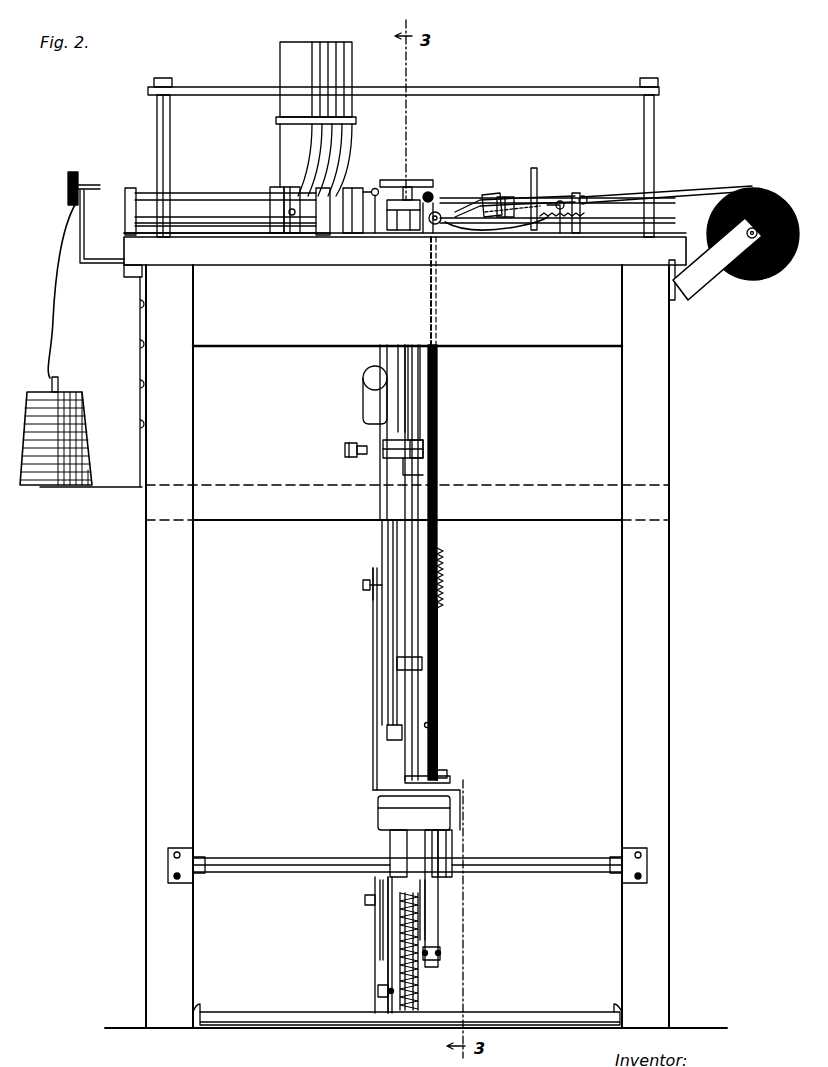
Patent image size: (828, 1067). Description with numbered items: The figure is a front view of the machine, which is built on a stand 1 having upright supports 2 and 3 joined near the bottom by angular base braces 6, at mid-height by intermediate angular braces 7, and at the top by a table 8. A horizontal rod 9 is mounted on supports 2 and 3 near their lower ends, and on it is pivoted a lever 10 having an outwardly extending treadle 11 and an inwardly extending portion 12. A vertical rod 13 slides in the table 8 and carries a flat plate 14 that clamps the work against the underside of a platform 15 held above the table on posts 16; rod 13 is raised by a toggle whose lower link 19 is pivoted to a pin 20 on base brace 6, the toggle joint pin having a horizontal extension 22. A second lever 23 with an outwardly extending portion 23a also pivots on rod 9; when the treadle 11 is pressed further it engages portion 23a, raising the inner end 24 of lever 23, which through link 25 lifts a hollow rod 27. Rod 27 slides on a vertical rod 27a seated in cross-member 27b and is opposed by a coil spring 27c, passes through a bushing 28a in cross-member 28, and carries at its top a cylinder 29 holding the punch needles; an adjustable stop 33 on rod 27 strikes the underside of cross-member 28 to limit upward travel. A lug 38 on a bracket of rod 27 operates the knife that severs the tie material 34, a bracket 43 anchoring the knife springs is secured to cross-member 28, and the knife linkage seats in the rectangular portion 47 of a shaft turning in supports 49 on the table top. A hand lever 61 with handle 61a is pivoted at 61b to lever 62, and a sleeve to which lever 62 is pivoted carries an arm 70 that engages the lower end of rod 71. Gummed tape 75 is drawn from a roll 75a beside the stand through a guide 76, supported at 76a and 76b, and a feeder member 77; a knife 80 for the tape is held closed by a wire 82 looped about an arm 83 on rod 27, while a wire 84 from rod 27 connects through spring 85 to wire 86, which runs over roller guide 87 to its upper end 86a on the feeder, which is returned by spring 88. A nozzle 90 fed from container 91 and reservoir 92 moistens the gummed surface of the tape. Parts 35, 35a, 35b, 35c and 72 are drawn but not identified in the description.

The stand 1 is at (678, 586).
The support 2 is at (160, 805).
The support 3 is at (660, 779).
The angular base brace 6 is at (200, 1008).
The intermediate angular brace 7 is at (257, 512).
The table 8 is at (145, 250).
The horizontally disposed rod 9 is at (275, 869).
The lever 10 is at (380, 883).
The treadle portion 11 is at (382, 800).
The inwardly extending portion 12 is at (378, 935).
The vertically extending rod 13 is at (408, 182).
The flat plate 14 is at (418, 186).
The horizontal platform 15 is at (450, 88).
The posts 16 is at (157, 128).
The lower link 19 is at (378, 972).
The pin 20 is at (378, 990).
The horizontal extension 22 is at (368, 900).
The lever 23 is at (440, 921).
The outwardly extending portion 23a is at (452, 848).
The inner end 24 is at (441, 954).
The link 25 is at (430, 905).
The hollow rod 27 is at (418, 632).
The vertical rod 27a is at (420, 996).
The cross-member 27b is at (376, 1022).
The coil spring 27c is at (420, 976).
The cross-member 28 is at (430, 466).
The bushing 28a is at (437, 462).
The cylinder 29 is at (420, 392).
The stop 33 is at (425, 664).
The tie material 34 is at (52, 282).
The lever 35 is at (68, 180).
The block 35a is at (277, 187).
The block 35b is at (292, 187).
The rod 35c is at (534, 170).
The lug or pin 38 is at (345, 446).
The bracket 43 is at (358, 452).
The upper rectangular portion 47 is at (197, 208).
The supports 49 is at (128, 188).
The lever 61 is at (380, 470).
The handle 61a is at (364, 398).
The pivot 61b is at (364, 585).
The lever 62 is at (376, 702).
The arm 70 is at (387, 729).
The rod 71 is at (395, 682).
The rod 72 is at (385, 535).
The gummed tape 75 is at (670, 190).
The roll 75a is at (760, 190).
The guide 76 is at (560, 203).
The guide support 76a is at (580, 198).
The guide support 76b is at (470, 210).
The feeder member 77 is at (505, 197).
The knife 80 is at (433, 196).
The wire 82 is at (428, 302).
The arm 83 is at (448, 771).
The wire 84 is at (438, 706).
The spring 85 is at (440, 582).
The wire 86 is at (437, 420).
The upper end 86a is at (488, 232).
The roller guide 87 is at (438, 225).
The spring 88 is at (562, 236).
The nozzle 90 is at (375, 188).
The container 91 is at (360, 190).
The reservoir 92 is at (290, 70).